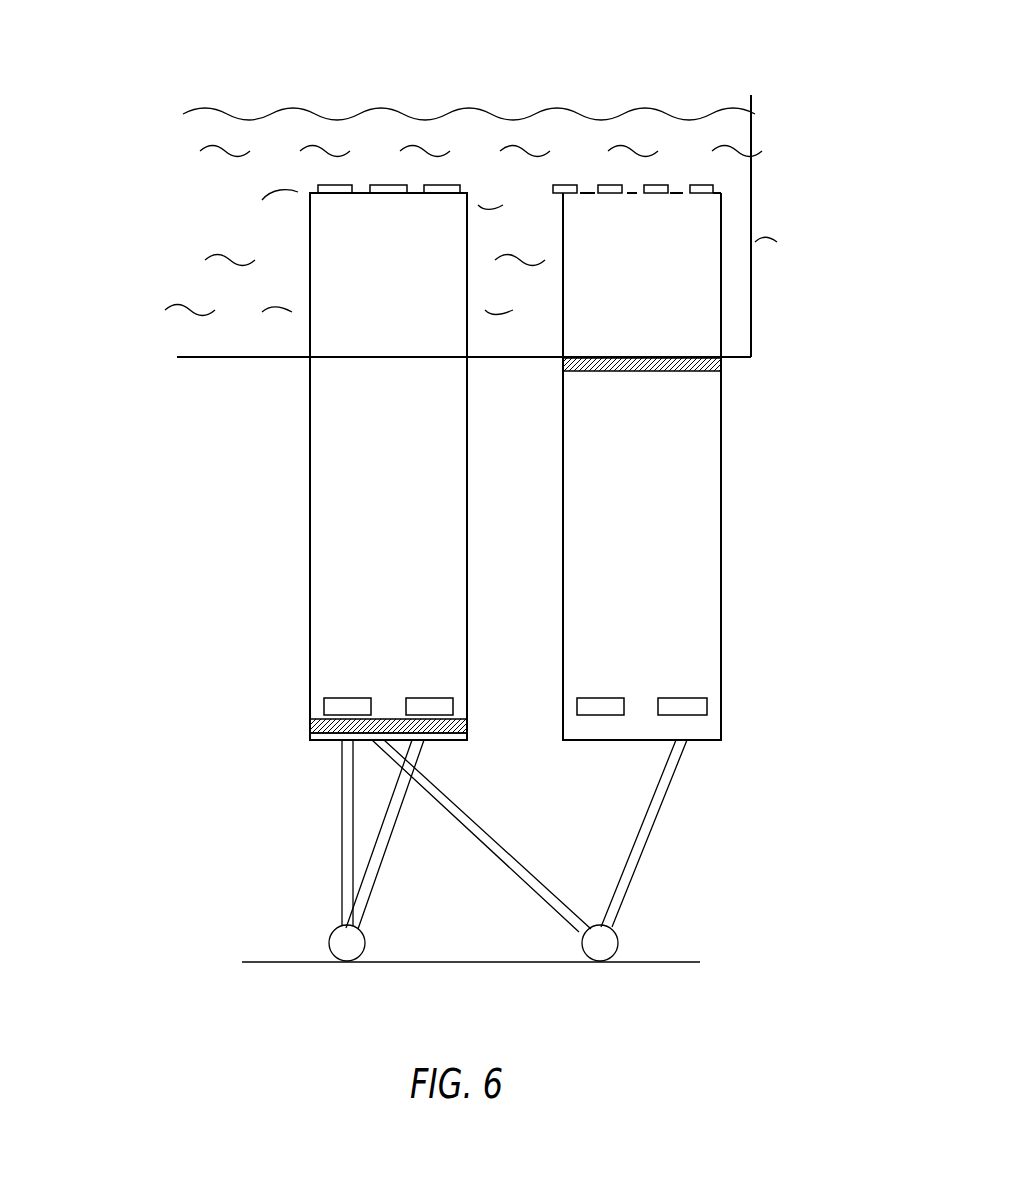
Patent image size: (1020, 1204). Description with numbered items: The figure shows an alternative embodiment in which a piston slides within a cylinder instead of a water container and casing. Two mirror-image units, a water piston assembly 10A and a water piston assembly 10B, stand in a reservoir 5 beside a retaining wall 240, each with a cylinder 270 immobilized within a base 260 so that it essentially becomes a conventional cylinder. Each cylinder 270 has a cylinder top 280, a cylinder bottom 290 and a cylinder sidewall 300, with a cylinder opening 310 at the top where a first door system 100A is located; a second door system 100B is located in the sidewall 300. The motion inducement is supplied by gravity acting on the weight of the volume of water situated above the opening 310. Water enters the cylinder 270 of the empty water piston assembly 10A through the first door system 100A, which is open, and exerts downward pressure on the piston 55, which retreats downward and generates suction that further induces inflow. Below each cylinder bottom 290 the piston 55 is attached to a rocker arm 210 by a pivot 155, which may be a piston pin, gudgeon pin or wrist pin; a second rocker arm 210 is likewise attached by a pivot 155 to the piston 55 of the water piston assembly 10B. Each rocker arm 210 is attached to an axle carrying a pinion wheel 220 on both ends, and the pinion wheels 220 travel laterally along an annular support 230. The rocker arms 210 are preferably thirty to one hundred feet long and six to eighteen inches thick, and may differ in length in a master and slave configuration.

The reservoir 5 is at (407, 86).
The water piston assembly 10A is at (292, 212).
The water piston assembly 10B is at (724, 476).
The piston 55 is at (686, 371).
The first door system 100A is at (379, 194).
The second door system 100B is at (605, 700).
The pivot 155 is at (425, 741).
The rocker arm 210 is at (345, 835).
The pinion wheel 220 is at (352, 943).
The annular support 230 is at (280, 963).
The retaining wall 240 is at (752, 240).
The base 260 is at (190, 358).
The cylinder 270 is at (328, 553).
The cylinder top 280 is at (306, 186).
The cylinder bottom 290 is at (307, 743).
The cylinder sidewall 300 is at (310, 485).
The cylinder opening 310 is at (379, 172).